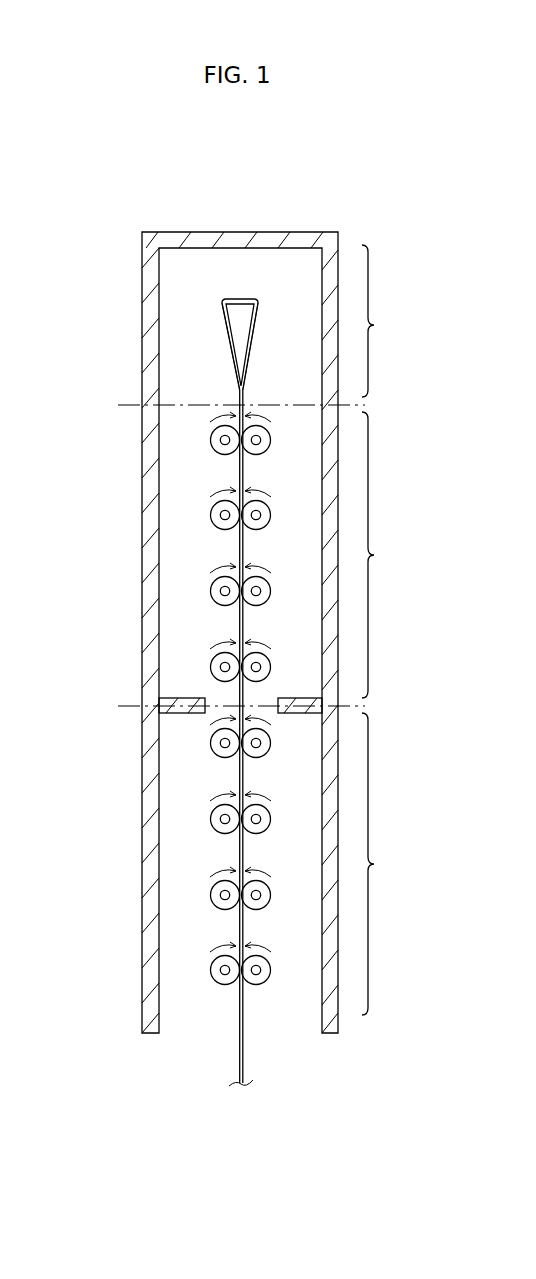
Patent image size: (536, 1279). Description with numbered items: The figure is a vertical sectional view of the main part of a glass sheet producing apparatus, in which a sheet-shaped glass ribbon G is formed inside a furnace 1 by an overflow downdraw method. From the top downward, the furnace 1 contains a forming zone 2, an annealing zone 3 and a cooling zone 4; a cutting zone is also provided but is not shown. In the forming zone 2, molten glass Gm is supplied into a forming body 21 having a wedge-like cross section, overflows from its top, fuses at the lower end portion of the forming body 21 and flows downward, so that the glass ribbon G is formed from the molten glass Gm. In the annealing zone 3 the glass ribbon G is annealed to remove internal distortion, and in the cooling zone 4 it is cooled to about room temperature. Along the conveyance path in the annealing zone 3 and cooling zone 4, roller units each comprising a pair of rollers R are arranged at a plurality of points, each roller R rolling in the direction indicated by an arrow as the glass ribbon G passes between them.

The furnace 1 is at (272, 236).
The forming zone 2 is at (378, 321).
The annealing zone 3 is at (378, 555).
The cooling zone 4 is at (378, 864).
The forming body 21 is at (238, 328).
The molten glass Gm is at (243, 298).
The glass ribbon G is at (244, 626).
The rollers R is at (220, 526).